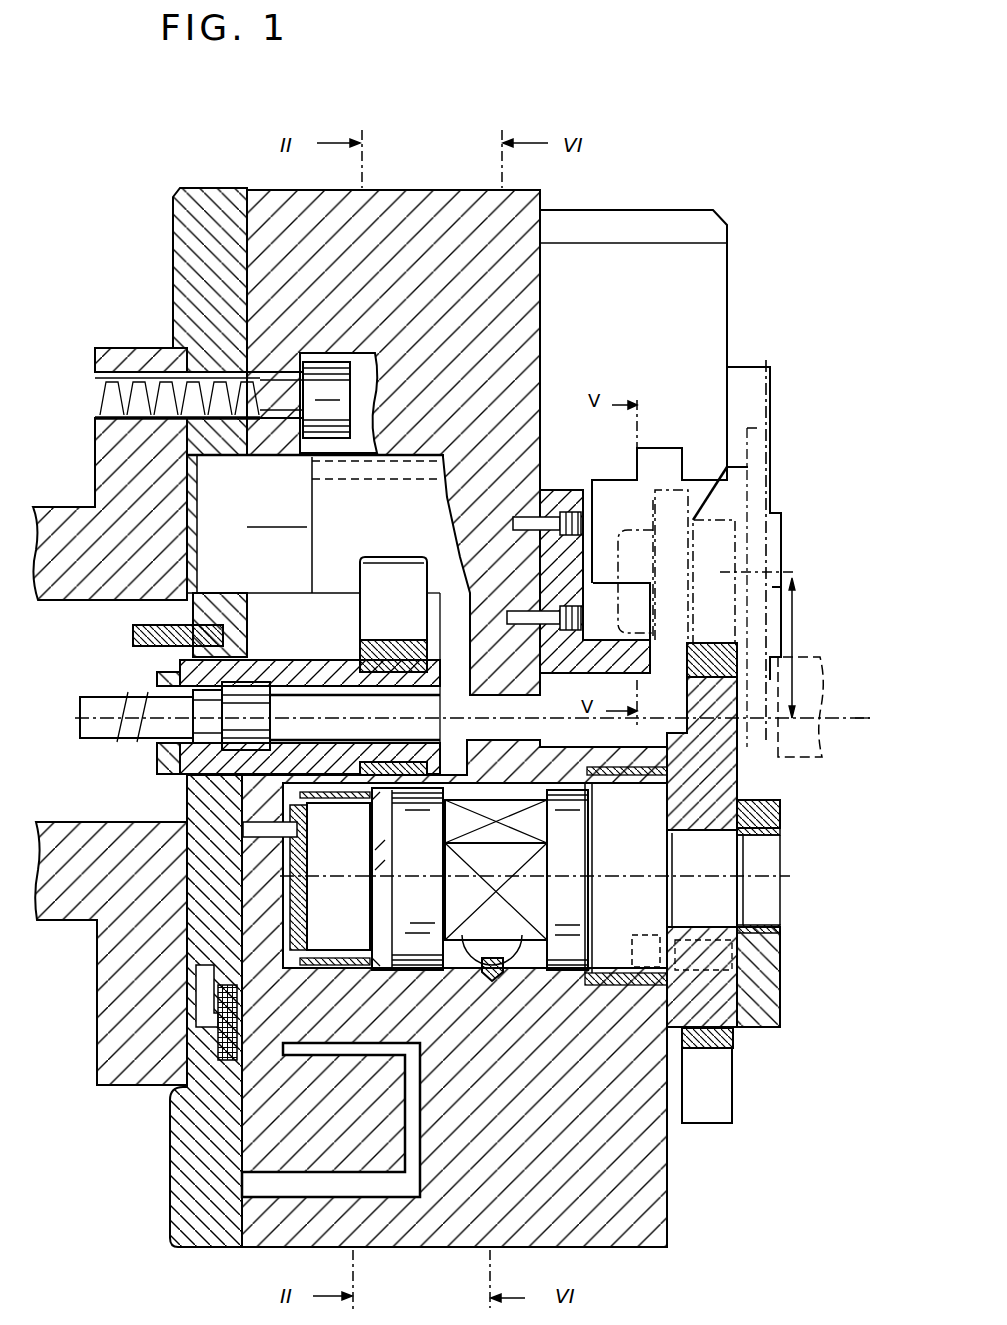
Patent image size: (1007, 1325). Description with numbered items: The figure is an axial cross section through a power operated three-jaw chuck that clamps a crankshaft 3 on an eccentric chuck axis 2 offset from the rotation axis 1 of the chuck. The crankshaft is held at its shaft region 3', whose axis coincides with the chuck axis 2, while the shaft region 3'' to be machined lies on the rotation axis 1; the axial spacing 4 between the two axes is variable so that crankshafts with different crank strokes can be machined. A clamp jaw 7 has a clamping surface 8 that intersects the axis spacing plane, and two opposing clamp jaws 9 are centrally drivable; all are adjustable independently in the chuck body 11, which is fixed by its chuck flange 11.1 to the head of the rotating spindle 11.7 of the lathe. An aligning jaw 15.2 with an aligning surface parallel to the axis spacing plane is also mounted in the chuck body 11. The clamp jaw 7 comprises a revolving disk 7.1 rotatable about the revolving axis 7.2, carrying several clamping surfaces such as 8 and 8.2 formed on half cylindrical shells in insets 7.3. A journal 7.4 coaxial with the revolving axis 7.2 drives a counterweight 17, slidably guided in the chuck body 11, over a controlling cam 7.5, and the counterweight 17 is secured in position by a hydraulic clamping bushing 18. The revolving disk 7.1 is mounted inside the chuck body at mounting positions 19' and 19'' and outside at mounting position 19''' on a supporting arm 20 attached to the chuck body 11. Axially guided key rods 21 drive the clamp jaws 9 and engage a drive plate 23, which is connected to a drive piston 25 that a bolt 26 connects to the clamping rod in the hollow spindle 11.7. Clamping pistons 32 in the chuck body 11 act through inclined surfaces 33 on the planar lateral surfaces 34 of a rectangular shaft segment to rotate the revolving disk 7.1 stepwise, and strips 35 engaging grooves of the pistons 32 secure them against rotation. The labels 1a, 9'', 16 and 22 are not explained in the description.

The rotation axis 1 is at (378, 722).
The axis of shaft 1a is at (865, 709).
The chuck axis 2 is at (676, 583).
The crankshaft 3 is at (787, 591).
The shaft region 3' is at (714, 582).
The shaft region 3'' is at (812, 699).
The axial spacing 4 is at (798, 650).
The clamp jaw 7 is at (742, 772).
The revolving disk 7.1 is at (726, 1007).
The revolving axis 7.2 is at (412, 875).
The insets 7.3 is at (745, 658).
The journal 7.4 is at (358, 857).
The controlling cam 7.5 is at (302, 823).
The clamping surface 8 is at (708, 640).
The clamping surface 8.2 is at (733, 1057).
The clamp jaws 9 is at (617, 548).
The stop 9'' is at (765, 557).
The chuck body 11 is at (543, 342).
The chuck flange 11.1 is at (185, 877).
The rotating spindle 11.7 is at (100, 1087).
The aligning jaw 15.2 is at (782, 560).
The reference plane 16 is at (785, 576).
The counterweight 17 is at (187, 944).
The hydraulic clamping bushing 18 is at (192, 1065).
The mounting position 19' is at (338, 929).
The mounting position 19'' is at (626, 876).
The mounting position 19''' is at (787, 920).
The supporting arm 20 is at (770, 974).
The key rods 21 is at (365, 516).
The piston 22 is at (392, 558).
The drive plate 23 is at (363, 603).
The drive piston 25 is at (318, 670).
The bolt 26 is at (155, 690).
The clamping pistons 32 is at (517, 962).
The inclined surfaces 33 is at (512, 935).
The planar lateral surfaces 34 is at (543, 831).
The strips 35 is at (491, 958).